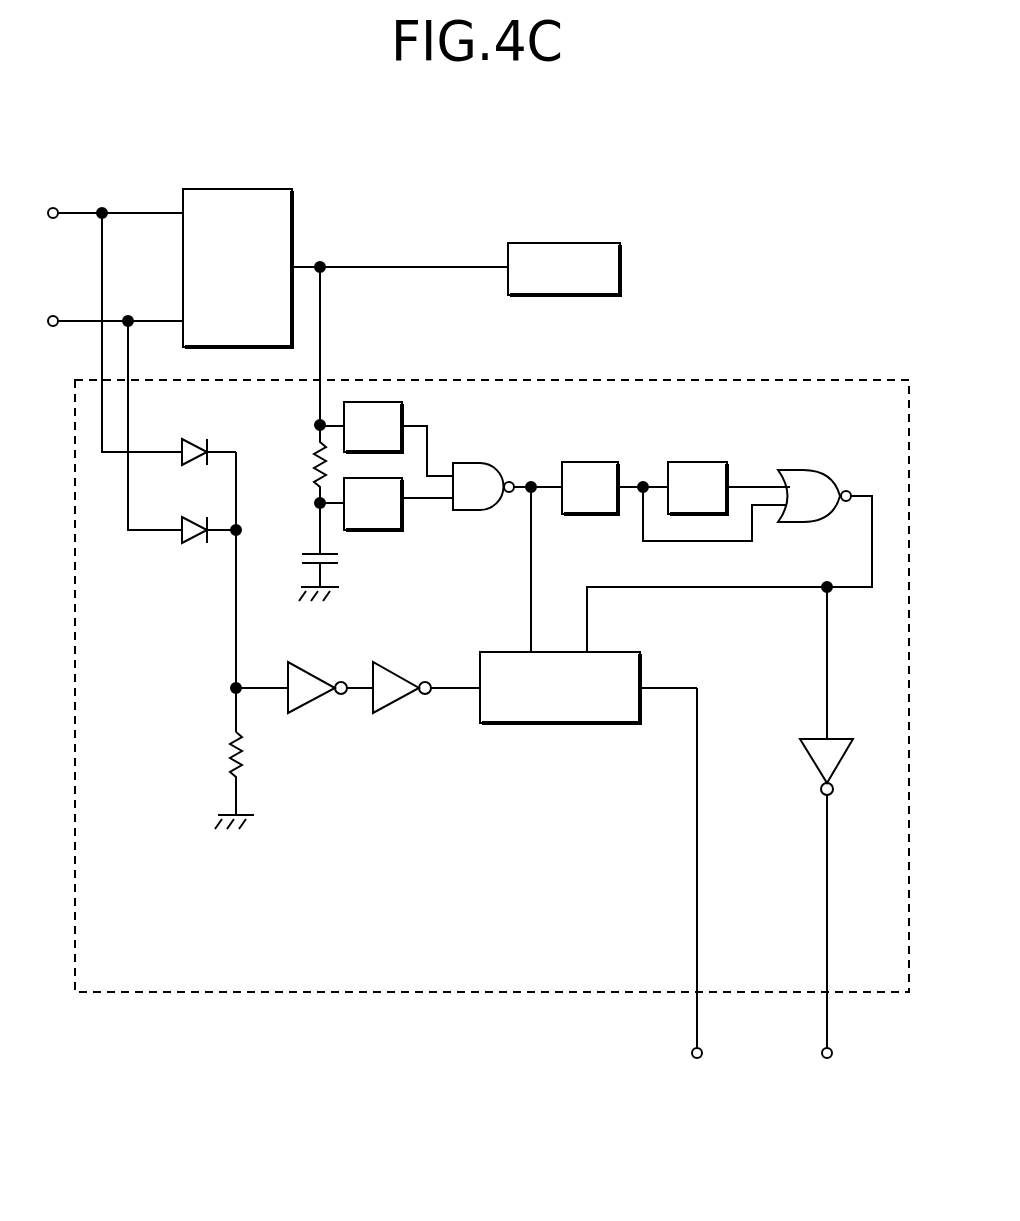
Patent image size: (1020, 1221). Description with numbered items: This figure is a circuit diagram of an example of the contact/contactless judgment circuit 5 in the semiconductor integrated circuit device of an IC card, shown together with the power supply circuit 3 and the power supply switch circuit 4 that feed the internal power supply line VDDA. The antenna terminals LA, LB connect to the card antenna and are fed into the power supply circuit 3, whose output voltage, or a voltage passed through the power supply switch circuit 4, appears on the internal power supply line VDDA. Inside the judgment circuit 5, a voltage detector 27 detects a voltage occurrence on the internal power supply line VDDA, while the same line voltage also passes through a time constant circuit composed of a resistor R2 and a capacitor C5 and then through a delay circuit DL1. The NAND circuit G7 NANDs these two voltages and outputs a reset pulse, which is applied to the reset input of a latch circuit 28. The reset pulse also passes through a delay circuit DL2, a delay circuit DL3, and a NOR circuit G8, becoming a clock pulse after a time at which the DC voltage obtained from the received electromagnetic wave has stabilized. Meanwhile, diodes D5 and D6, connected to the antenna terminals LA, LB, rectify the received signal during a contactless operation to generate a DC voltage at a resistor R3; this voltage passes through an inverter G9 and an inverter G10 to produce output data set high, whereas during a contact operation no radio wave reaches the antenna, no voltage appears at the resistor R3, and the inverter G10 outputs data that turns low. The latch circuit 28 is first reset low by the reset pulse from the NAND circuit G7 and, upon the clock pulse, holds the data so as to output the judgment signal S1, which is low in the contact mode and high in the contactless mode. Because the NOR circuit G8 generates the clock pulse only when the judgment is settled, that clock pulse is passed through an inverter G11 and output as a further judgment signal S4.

The power supply circuit 3 is at (240, 189).
The power supply switch circuit 4 is at (565, 243).
The contact/contactless judgment circuit 5 is at (863, 380).
The voltage detector 27 is at (404, 418).
The latch circuit 28 is at (588, 723).
The antenna terminal LA is at (50, 207).
The antenna terminal LB is at (53, 326).
The internal power supply line VDDA is at (414, 265).
The diode D5 is at (208, 435).
The diode D6 is at (210, 546).
The resistor R2 is at (309, 410).
The resistor R3 is at (223, 780).
The capacitor C5 is at (302, 575).
The delay circuit DL1 is at (398, 521).
The delay circuit DL2 is at (674, 486).
The delay circuit DL3 is at (729, 472).
The NAND circuit G7 is at (507, 541).
The NOR circuit G8 is at (729, 547).
The inverter G9 is at (304, 674).
The inverter G10 is at (426, 674).
The inverter G11 is at (806, 817).
The judgment signal S1 is at (716, 877).
The judgment signal S4 is at (846, 1054).